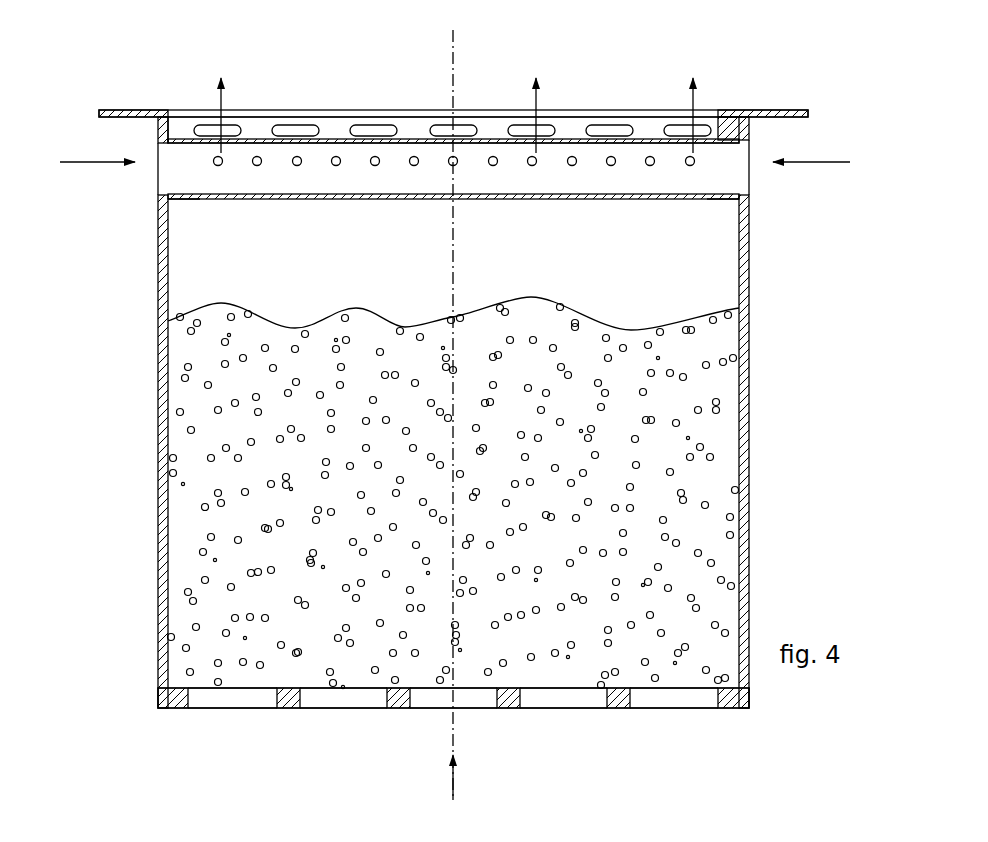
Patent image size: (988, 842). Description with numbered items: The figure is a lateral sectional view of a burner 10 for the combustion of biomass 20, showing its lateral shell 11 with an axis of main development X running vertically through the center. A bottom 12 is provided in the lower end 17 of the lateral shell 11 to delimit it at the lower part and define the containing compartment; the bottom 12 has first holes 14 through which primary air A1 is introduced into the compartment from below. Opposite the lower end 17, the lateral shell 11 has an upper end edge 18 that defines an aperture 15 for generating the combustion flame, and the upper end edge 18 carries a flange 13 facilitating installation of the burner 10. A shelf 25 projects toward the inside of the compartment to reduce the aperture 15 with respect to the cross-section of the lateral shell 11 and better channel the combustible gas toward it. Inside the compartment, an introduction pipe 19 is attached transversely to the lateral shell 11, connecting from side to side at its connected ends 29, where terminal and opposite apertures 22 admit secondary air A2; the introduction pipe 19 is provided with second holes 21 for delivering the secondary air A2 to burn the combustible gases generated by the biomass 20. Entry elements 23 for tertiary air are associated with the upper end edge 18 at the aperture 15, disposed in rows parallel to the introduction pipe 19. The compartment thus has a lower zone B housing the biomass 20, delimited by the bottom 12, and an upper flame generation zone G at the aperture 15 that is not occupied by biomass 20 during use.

The burner 10 is at (100, 510).
The lateral shell 11 is at (750, 375).
The bottom 12 is at (617, 705).
The flange 13 is at (438, 91).
The first holes 14 is at (325, 701).
The aperture 15 is at (453, 100).
The lower end 17 is at (400, 702).
The upper end edge 18 is at (477, 91).
The introduction pipe 19 is at (467, 202).
The biomass 20 is at (464, 493).
The second holes 21 is at (298, 142).
The apertures 22 is at (460, 187).
The entry elements 23 is at (295, 126).
The shelf 25 is at (118, 121).
The connected ends 29 is at (183, 198).
The primary air A1 is at (453, 783).
The secondary air A2 is at (222, 106).
The lower zone B is at (213, 553).
The upper flame generation zone G is at (207, 285).
The axis of main development X is at (453, 48).